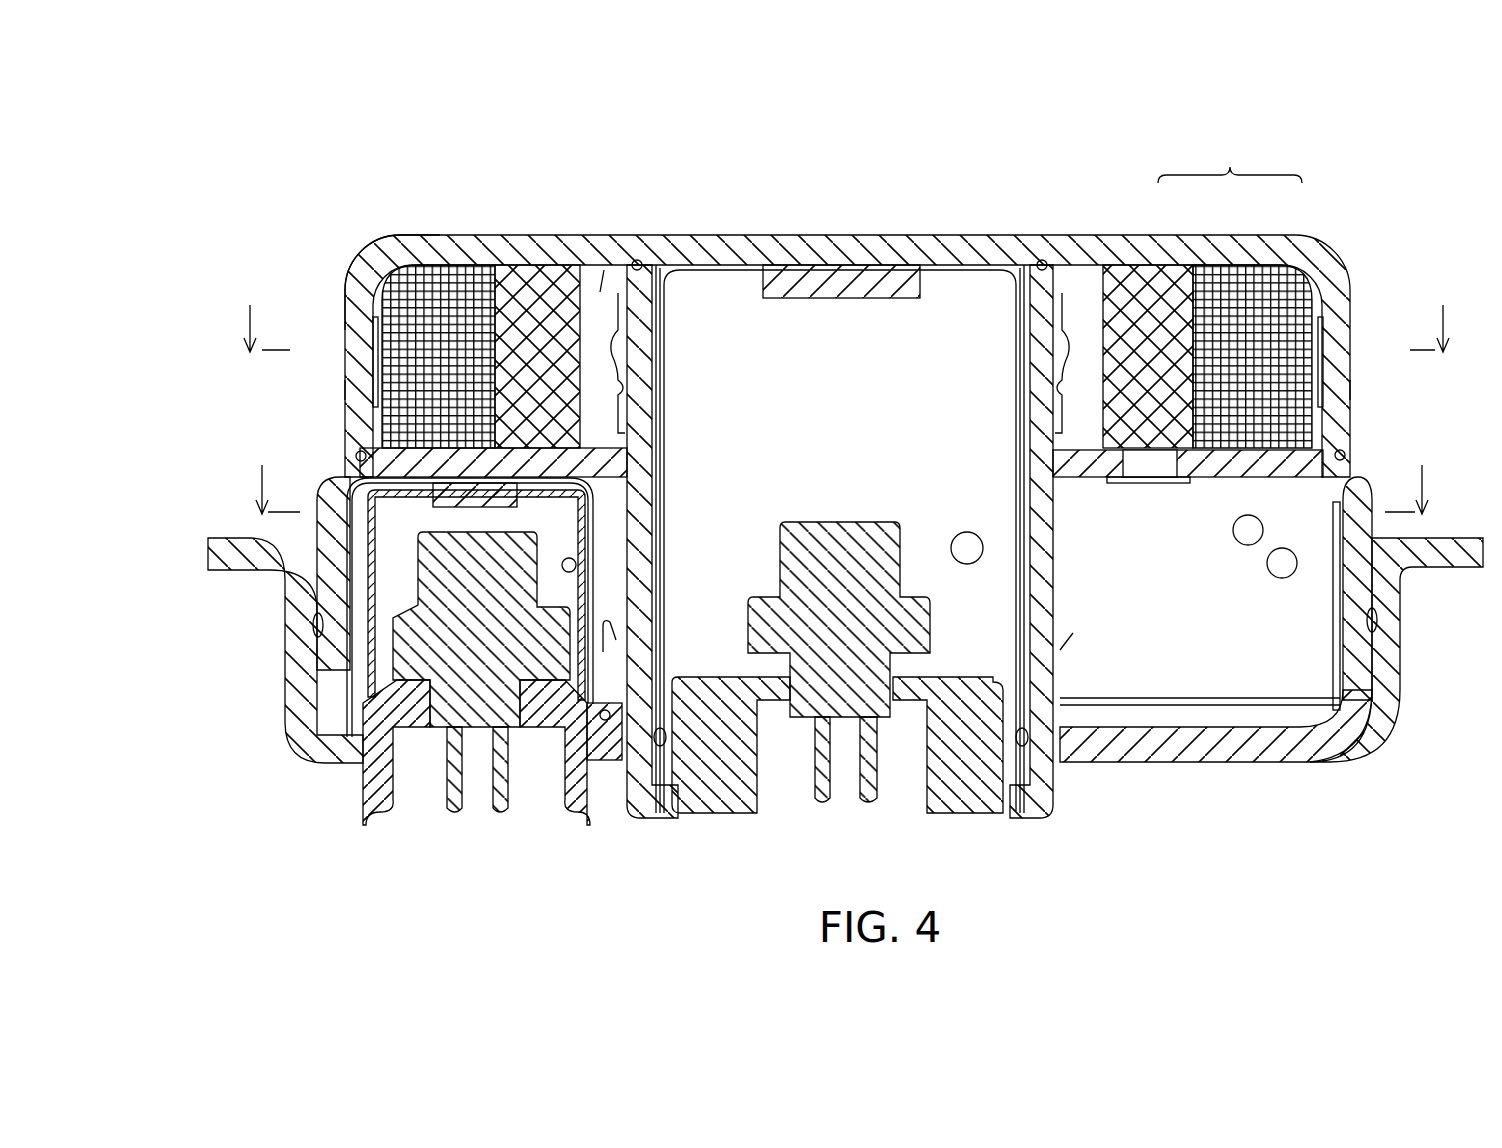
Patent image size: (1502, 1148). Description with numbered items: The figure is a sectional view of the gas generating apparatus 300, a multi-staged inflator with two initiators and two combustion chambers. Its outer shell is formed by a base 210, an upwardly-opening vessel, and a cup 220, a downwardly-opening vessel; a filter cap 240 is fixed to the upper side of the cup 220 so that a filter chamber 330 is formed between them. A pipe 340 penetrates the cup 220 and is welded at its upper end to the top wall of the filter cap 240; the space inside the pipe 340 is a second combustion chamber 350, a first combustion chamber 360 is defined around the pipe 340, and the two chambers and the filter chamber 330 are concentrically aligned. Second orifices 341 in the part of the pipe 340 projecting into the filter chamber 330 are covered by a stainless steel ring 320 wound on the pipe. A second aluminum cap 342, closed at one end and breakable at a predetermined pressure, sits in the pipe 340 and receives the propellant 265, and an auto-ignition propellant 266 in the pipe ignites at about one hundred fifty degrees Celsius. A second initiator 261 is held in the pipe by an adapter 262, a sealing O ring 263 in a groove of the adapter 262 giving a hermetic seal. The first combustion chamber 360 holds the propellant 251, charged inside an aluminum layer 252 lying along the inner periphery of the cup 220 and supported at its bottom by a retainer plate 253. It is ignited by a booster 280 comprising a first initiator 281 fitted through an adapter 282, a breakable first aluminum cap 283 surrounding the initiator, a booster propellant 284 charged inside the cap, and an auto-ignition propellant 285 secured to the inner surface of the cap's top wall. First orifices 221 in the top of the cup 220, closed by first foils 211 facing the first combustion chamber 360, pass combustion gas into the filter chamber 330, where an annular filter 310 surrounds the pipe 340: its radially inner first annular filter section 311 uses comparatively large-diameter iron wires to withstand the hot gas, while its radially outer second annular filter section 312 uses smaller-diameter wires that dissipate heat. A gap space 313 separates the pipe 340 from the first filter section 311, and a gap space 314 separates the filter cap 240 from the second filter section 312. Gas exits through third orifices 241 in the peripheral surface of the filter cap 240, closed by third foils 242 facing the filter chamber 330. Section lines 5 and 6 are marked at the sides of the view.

The gas generating apparatus 300 is at (288, 160).
The filter cap 240 is at (668, 230).
The gap space 314 is at (362, 262).
The third orifices 241 is at (355, 385).
The third foils 242 is at (372, 352).
The section line 6 is at (846, 312).
The section line 5 is at (841, 475).
The filter 310 is at (1230, 158).
The second annular filter section 312 is at (460, 268).
The first annular filter section 311 is at (510, 268).
The filter chamber 330 is at (580, 265).
The gap space 313 is at (605, 268).
The auto-ignition propellant 285 is at (358, 452).
The first orifices 221 is at (1170, 485).
The first foils 211 is at (1140, 488).
The pipe 340 is at (856, 551).
The stainless steel ring 320 is at (627, 352).
The second orifices 341 is at (660, 395).
The second aluminum cap 342 is at (668, 466).
The second combustion chamber 350 is at (785, 452).
The first combustion chamber 360 is at (1097, 626).
The auto-ignition propellant 266 is at (848, 300).
The second initiator 261 is at (882, 720).
The sealing O ring 263 is at (700, 790).
The adapter 262 is at (975, 800).
The propellant 265 is at (967, 566).
The first aluminum cap 283 is at (600, 520).
The booster propellant 284 is at (578, 567).
The retainer plate 253 is at (618, 624).
The booster 280 is at (492, 720).
The first initiator 281 is at (512, 738).
The adapter 282 is at (418, 705).
The base 210 is at (1335, 770).
The cup 220 is at (1388, 568).
The aluminum layer 252 is at (1332, 680).
The propellant 251 is at (1290, 548).